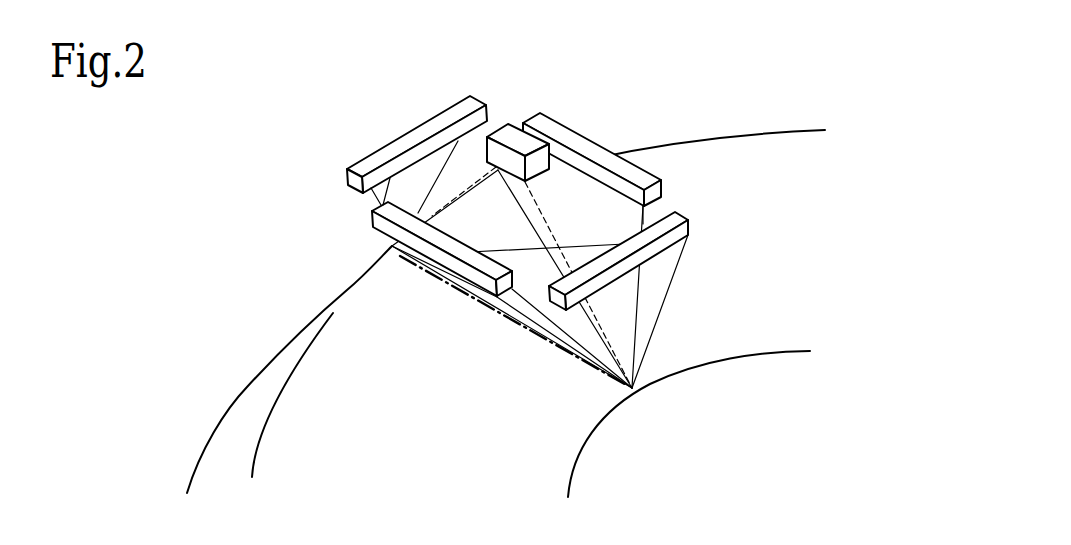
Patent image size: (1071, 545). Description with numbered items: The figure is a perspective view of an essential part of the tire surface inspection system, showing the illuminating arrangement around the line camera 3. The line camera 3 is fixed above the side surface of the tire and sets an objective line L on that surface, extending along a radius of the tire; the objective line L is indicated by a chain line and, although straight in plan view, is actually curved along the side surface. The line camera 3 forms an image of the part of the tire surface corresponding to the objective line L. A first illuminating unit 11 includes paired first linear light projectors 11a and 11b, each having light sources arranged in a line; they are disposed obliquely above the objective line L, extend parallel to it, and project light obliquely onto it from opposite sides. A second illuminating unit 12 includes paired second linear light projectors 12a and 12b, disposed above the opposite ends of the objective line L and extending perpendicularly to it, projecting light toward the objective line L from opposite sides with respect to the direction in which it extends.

The line camera 3 is at (513, 131).
The first illuminating unit 11 is at (495, 180).
The first linear light projector 11a is at (380, 229).
The first linear light projector 11b is at (577, 138).
The second illuminating unit 12 is at (567, 186).
The second linear light projector 12a is at (424, 128).
The second linear light projector 12b is at (665, 226).
The objective line L is at (497, 313).